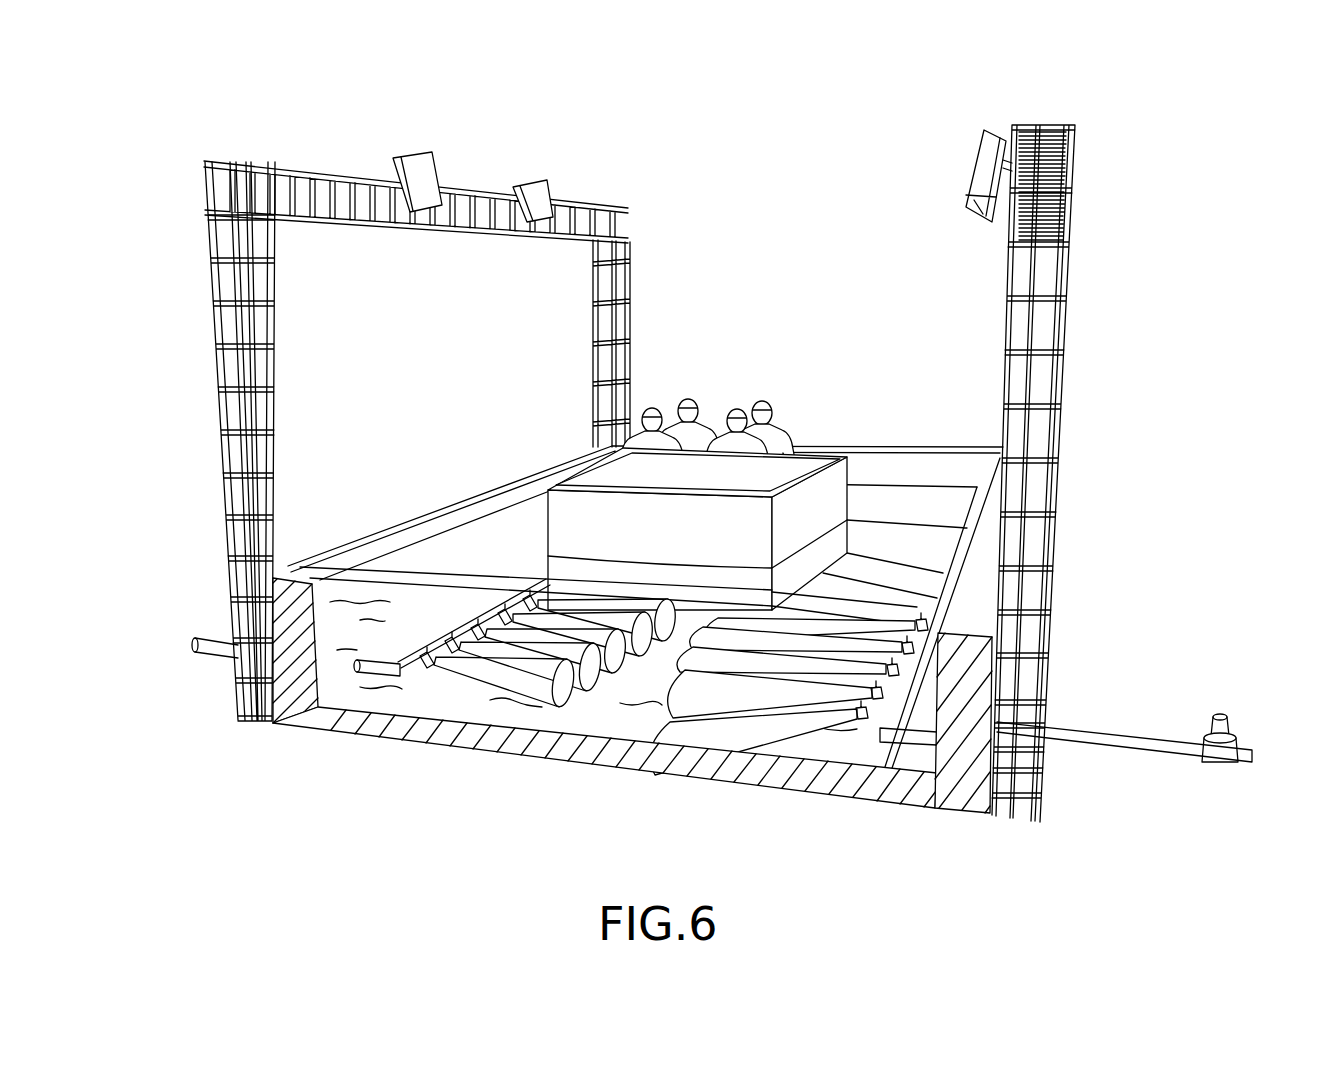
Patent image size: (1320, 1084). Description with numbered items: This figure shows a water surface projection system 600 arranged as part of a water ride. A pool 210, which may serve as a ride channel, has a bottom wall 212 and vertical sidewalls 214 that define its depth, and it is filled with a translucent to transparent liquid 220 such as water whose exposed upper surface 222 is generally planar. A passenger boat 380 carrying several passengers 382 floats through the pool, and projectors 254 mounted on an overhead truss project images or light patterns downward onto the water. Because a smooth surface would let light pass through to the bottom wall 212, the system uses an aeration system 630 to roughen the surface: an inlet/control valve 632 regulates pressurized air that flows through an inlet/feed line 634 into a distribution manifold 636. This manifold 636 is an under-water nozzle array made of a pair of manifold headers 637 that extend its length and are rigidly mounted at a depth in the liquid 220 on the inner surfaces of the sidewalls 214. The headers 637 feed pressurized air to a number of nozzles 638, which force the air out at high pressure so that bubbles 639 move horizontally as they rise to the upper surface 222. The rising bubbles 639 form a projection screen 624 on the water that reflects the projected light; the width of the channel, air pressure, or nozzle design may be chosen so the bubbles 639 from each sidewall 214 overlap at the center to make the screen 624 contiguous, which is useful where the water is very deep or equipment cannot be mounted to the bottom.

The water surface projection system 600 is at (1120, 148).
The pool 210 is at (585, 571).
The bottom wall 212 is at (352, 730).
The sidewalls 214 is at (236, 676).
The liquid 220 is at (455, 709).
The upper surface 222 is at (300, 566).
The projectors 254 is at (513, 185).
The passenger boat 380 is at (965, 195).
The passengers 382 is at (703, 402).
The projection screen 624 is at (903, 497).
The aeration system 630 is at (923, 732).
The inlet/control valve 632 is at (1212, 763).
The inlet/feed line 634 is at (1084, 733).
The distribution manifold 636 is at (920, 760).
The manifold headers 637 is at (885, 736).
The nozzles 638 is at (858, 722).
The bubbles 639 is at (688, 712).